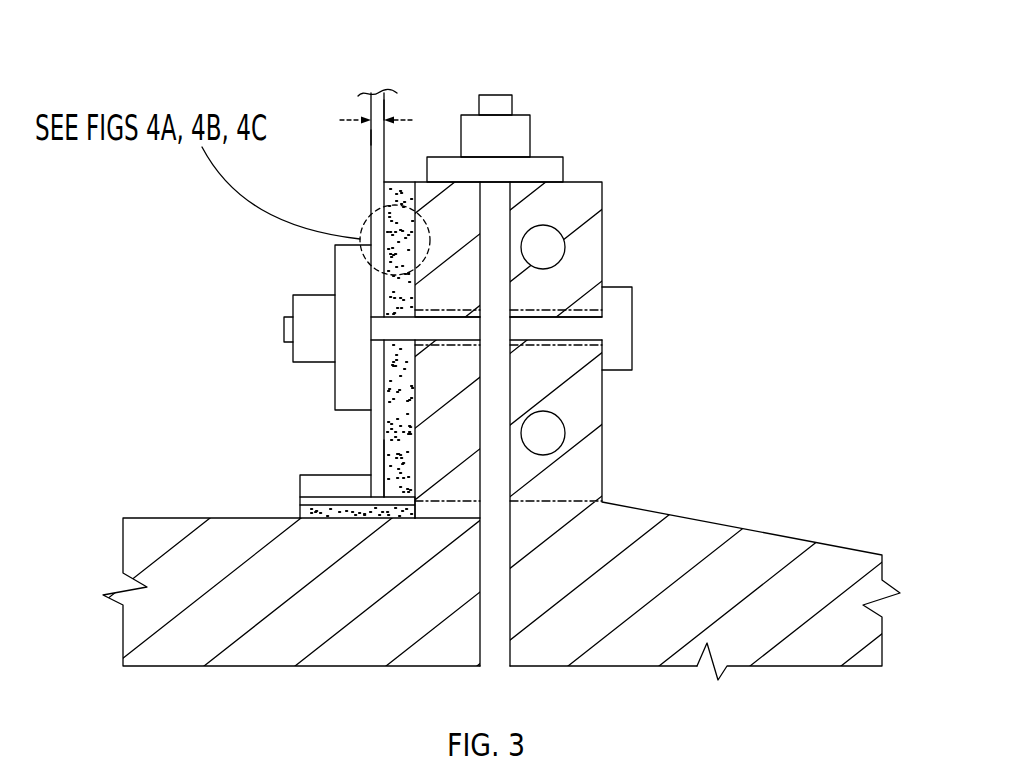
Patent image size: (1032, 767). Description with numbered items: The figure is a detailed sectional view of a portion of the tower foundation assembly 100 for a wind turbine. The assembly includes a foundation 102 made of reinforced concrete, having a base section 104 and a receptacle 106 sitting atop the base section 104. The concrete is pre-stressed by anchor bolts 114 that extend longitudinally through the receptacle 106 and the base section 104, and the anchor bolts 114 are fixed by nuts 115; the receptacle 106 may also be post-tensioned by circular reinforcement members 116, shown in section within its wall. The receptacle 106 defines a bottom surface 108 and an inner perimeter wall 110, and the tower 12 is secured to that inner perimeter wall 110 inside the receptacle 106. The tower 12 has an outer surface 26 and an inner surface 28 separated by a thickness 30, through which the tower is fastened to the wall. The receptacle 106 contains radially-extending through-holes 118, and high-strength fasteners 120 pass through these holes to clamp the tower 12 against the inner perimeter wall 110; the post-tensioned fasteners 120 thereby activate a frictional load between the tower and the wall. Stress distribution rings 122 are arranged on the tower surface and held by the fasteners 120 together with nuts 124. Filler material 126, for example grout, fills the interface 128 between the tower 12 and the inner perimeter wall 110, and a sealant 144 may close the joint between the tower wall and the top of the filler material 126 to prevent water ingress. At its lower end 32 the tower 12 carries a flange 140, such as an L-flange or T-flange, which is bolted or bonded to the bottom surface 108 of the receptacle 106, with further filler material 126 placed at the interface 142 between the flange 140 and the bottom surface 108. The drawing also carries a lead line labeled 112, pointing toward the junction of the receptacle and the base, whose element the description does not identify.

The tower 12 is at (397, 137).
The outer surface 26 is at (371, 172).
The inner surface 28 is at (386, 110).
The thickness 30 is at (357, 120).
The lower end 32 is at (377, 458).
The tower foundation assembly 100 is at (190, 210).
The foundation 102 is at (741, 401).
The base section 104 is at (828, 540).
The receptacle 106 is at (603, 236).
The bottom surface 108 is at (148, 518).
The inner perimeter wall 110 is at (413, 194).
The interface 112 is at (588, 514).
The anchor bolts 114 is at (523, 617).
The nuts 115 is at (530, 140).
The circular reinforcement members 116 is at (561, 229).
The radially-extending through-holes 118 is at (553, 347).
The fasteners 120 is at (553, 327).
The stress distribution rings 122 is at (322, 390).
The nuts 124 is at (301, 283).
The filler material 126 is at (398, 470).
The interface 128 is at (416, 433).
The flange 140 is at (289, 485).
The interface 142 is at (409, 529).
The sealant 144 is at (388, 182).